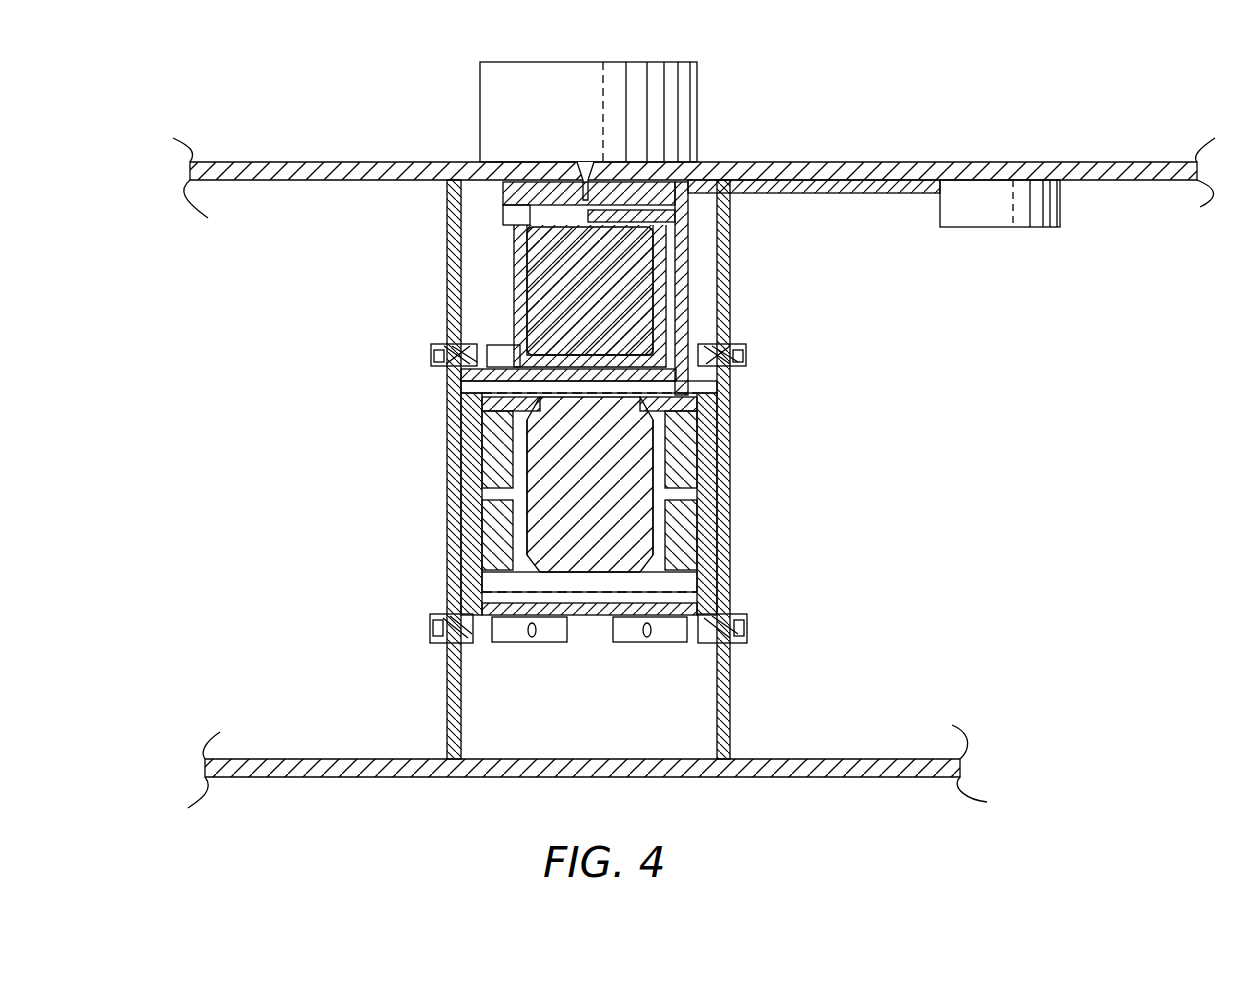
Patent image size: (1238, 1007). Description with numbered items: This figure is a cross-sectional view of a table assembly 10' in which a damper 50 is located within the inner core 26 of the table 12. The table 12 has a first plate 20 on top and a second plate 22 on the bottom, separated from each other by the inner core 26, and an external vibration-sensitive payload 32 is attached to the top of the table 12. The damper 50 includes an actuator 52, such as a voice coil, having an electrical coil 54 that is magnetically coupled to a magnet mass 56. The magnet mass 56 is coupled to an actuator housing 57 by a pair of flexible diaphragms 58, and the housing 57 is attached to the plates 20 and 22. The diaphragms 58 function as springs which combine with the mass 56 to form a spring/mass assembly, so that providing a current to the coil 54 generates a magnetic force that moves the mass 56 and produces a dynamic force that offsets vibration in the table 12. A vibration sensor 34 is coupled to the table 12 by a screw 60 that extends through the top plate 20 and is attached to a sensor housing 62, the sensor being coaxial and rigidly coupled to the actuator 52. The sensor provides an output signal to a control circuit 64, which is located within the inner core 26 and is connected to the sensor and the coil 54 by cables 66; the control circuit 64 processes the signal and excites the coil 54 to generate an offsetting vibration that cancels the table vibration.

The table assembly 10' is at (1054, 67).
The table 12 is at (776, 158).
The first plate 20 is at (298, 168).
The second plate 22 is at (303, 768).
The inner core 26 is at (974, 433).
The payload 32 is at (517, 109).
The vibration sensor 34 is at (586, 287).
The damper 50 is at (756, 516).
The actuator 52 is at (512, 523).
The electrical coil 54 is at (690, 462).
The magnet mass 56 is at (608, 525).
The actuator housing 57 is at (452, 478).
The flexible diaphragms 58 is at (487, 393).
The screw 60 is at (590, 172).
The sensor housing 62 is at (505, 193).
The control circuit 64 is at (1005, 215).
The cables 66 is at (830, 190).